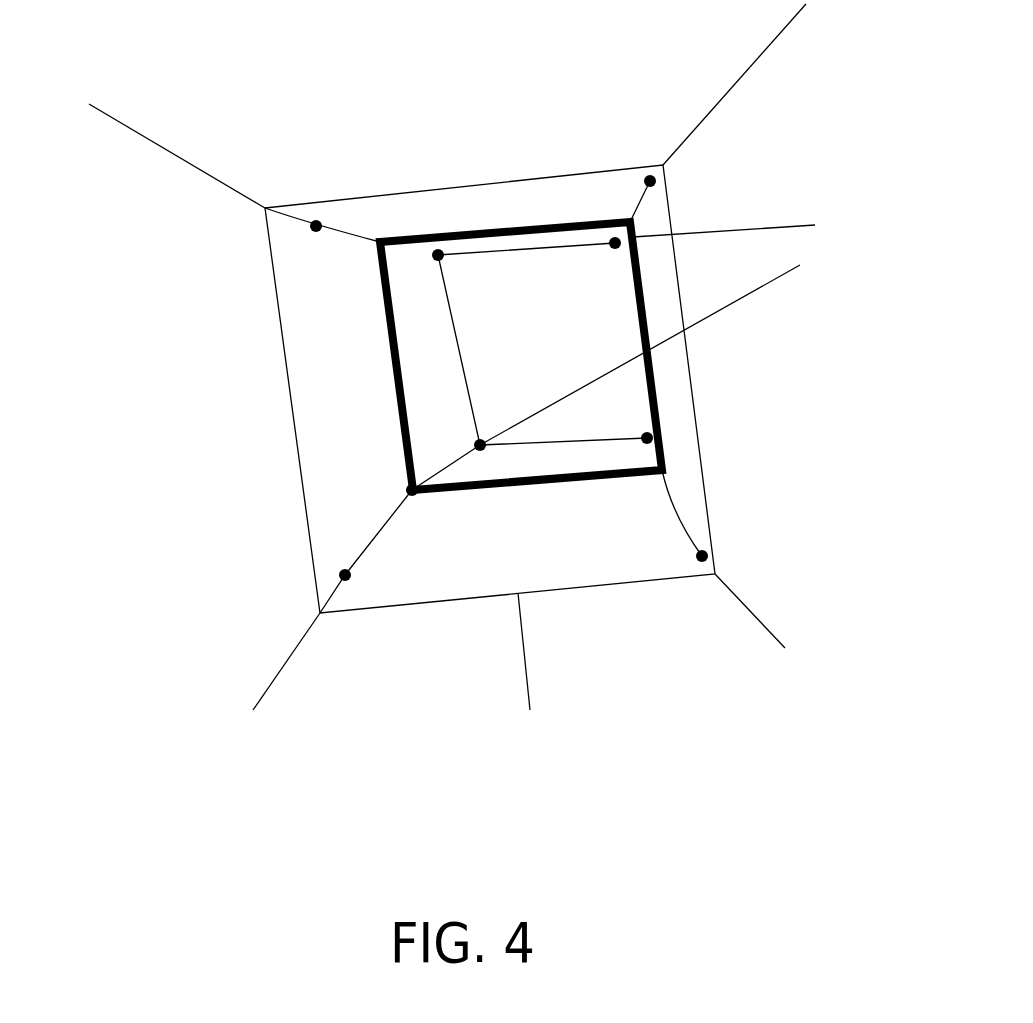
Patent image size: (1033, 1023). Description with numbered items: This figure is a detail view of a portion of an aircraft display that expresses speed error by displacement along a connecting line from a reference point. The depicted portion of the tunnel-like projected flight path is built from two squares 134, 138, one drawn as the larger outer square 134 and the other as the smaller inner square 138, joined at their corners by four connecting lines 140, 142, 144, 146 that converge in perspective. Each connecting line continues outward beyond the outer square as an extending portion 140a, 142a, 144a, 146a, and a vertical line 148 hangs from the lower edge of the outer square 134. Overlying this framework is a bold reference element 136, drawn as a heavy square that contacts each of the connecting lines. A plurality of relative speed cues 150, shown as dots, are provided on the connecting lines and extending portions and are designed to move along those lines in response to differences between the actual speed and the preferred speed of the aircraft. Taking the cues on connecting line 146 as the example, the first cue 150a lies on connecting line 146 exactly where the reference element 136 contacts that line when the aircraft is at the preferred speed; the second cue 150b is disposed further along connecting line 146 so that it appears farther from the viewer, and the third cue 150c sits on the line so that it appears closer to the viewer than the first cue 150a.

The square 134 is at (420, 607).
The reference element 136 is at (393, 363).
The square 138 is at (460, 334).
The connecting line 140 is at (290, 213).
The extending portion 140a is at (138, 135).
The connecting line 142 is at (635, 202).
The extending portion 142a is at (732, 82).
The connecting line 144 is at (677, 505).
The extending portion 144a is at (758, 620).
The connecting line 146 is at (380, 530).
The extending portion 146a is at (260, 700).
The vertical line 148 is at (525, 662).
The relative speed cues 150 is at (290, 512).
The first cue 150a is at (412, 490).
The second cue 150b is at (480, 445).
The third cue 150c is at (345, 575).